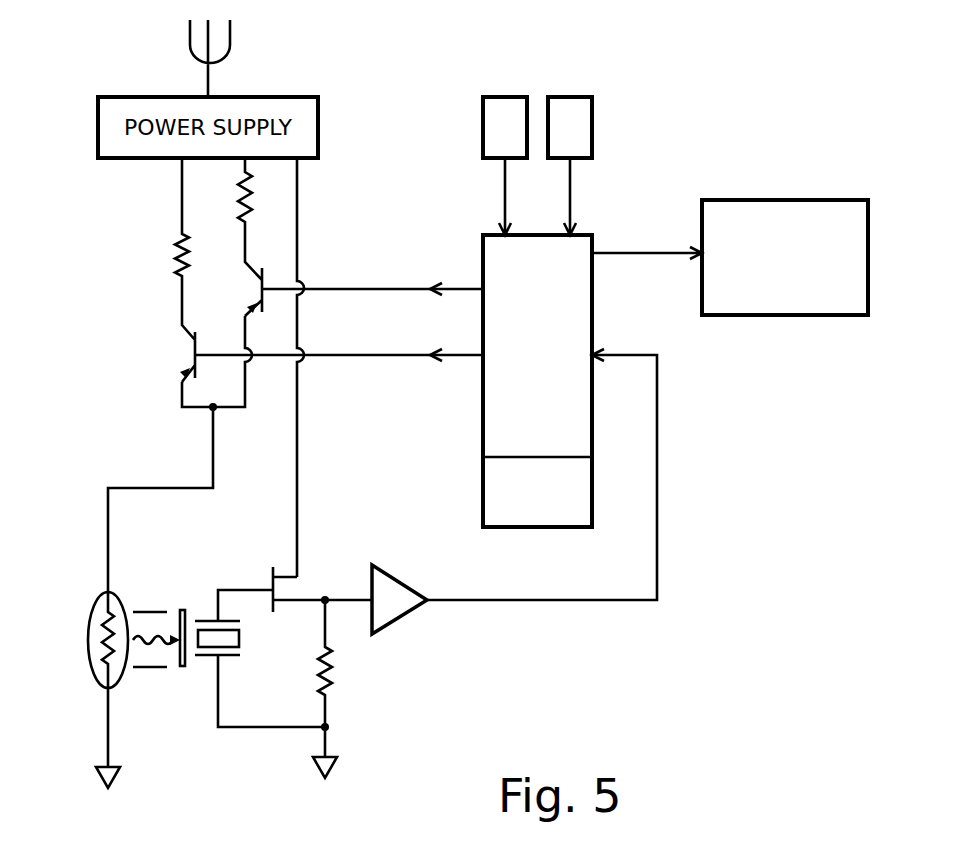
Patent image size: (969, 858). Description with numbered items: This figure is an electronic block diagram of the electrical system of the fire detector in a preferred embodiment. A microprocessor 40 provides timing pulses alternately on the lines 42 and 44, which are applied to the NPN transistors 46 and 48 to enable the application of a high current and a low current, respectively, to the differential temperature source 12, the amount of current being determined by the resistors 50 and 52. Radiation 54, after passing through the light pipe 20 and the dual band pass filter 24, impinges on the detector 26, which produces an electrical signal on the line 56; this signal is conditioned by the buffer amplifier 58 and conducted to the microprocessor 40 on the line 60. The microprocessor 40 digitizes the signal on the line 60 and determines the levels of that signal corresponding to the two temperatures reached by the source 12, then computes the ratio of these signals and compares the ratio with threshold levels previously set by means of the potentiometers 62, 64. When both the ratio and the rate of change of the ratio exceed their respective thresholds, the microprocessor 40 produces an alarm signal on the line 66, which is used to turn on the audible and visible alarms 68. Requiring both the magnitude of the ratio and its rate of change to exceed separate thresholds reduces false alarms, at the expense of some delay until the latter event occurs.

The differential temperature source 12 is at (95, 648).
The light pipe 20 is at (158, 612).
The dual band pass filter 24 is at (185, 607).
The detector 26 is at (240, 645).
The microprocessor 40 is at (482, 405).
The line 42 is at (355, 288).
The line 44 is at (330, 356).
The NPN transistor 46 is at (185, 336).
The NPN transistor 48 is at (258, 292).
The resistor 50 is at (176, 252).
The resistor 52 is at (250, 202).
The radiation 54 is at (155, 648).
The line 56 is at (340, 603).
The buffer amplifier 58 is at (390, 572).
The line 60 is at (580, 602).
The potentiometer 62 is at (490, 97).
The potentiometer 64 is at (592, 105).
The line 66 is at (622, 253).
The audible and visible alarms 68 is at (792, 200).